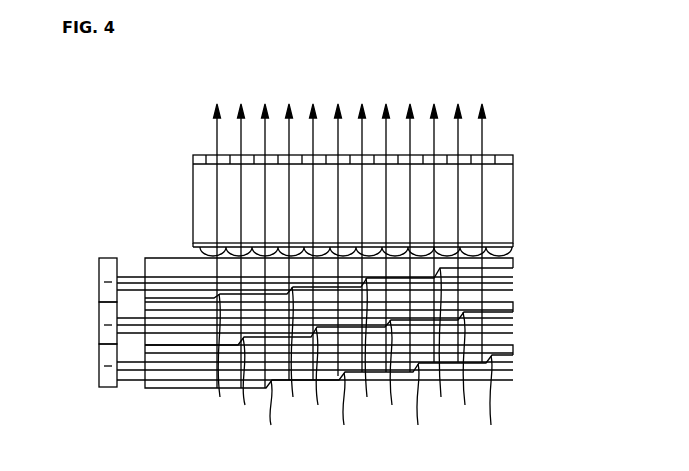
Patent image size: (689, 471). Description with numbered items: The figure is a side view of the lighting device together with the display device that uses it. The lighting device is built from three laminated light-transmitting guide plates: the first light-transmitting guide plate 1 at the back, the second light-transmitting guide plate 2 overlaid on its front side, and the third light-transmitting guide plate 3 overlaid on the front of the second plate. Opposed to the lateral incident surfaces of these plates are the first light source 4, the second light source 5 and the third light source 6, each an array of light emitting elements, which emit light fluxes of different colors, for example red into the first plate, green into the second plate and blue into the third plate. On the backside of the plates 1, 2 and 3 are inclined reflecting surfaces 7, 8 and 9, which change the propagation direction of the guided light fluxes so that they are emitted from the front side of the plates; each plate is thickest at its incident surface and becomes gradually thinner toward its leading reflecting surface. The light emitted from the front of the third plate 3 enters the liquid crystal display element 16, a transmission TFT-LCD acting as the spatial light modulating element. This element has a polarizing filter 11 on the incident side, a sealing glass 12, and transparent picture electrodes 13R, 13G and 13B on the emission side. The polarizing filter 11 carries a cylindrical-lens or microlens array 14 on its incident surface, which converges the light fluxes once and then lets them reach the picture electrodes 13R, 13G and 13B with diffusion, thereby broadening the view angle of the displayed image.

The first light-transmitting guide plate 1 is at (515, 351).
The second light-transmitting guide plate 2 is at (515, 307).
The third light-transmitting guide plate 3 is at (515, 263).
The first light source 4 is at (106, 366).
The second light source 5 is at (106, 325).
The third light source 6 is at (106, 282).
The reflecting surface 7 is at (382, 403).
The reflecting surface 8 is at (360, 369).
The reflecting surface 9 is at (334, 343).
The polarizing filter 11 is at (516, 242).
The sealing glass 12 is at (526, 180).
The picture electrode 13R is at (211, 156).
The picture electrode 13G is at (232, 156).
The picture electrode 13B is at (270, 156).
The cylindrical-lens array 14 is at (193, 247).
The liquid crystal display element 16 is at (516, 124).